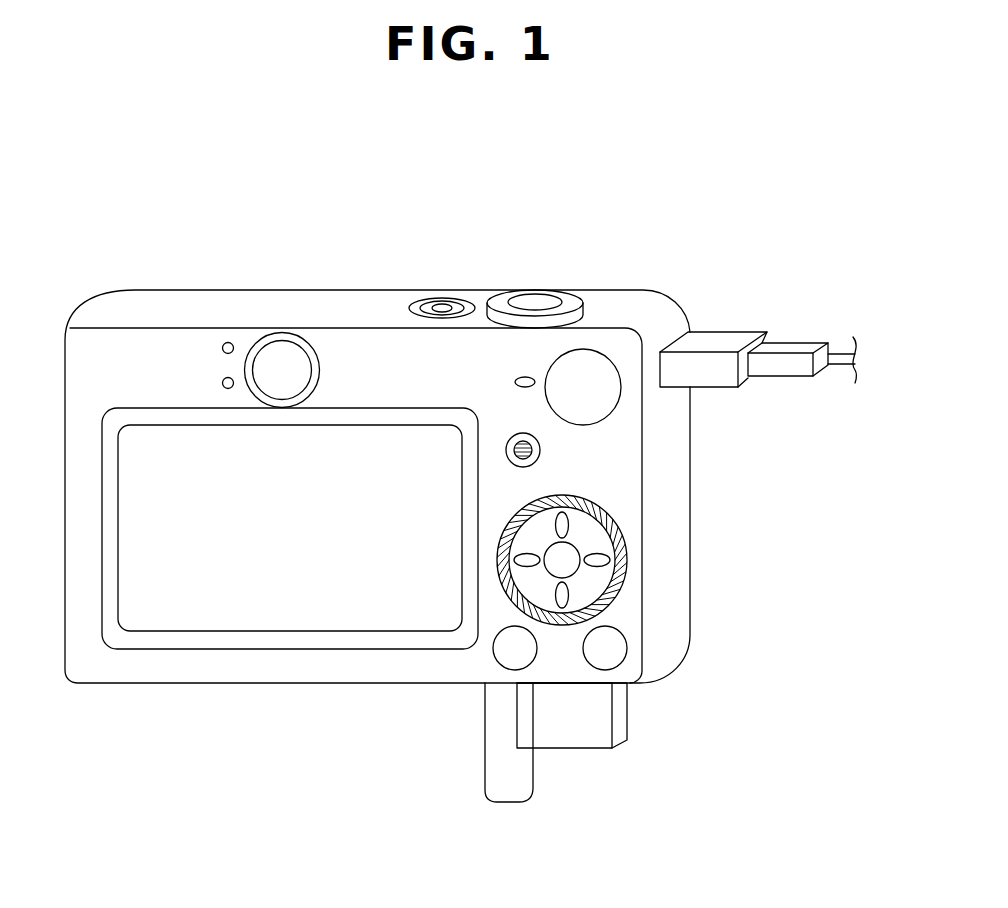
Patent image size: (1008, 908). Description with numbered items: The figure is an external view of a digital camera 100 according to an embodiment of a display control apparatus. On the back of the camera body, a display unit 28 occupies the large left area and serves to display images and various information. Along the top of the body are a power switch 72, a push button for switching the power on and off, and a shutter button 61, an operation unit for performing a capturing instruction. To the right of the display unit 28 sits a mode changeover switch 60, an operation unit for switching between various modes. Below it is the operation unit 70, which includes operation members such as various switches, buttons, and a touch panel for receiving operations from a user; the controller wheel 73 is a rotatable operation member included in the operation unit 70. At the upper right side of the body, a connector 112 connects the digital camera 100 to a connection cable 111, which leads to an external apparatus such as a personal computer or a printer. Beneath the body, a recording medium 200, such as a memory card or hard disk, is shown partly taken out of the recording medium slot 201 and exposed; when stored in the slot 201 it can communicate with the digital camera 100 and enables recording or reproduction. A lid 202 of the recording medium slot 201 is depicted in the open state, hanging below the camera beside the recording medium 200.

The digital camera 100 is at (150, 730).
The display unit 28 is at (178, 442).
The power switch 72 is at (441, 300).
The shutter button 61 is at (535, 300).
The mode changeover switch 60 is at (608, 403).
The connector 112 is at (713, 340).
The connection cable 111 is at (788, 352).
The operation unit 70 is at (535, 317).
The controller wheel 73 is at (535, 505).
The recording medium 200 is at (585, 738).
The recording medium slot 201 is at (535, 687).
The lid 202 is at (512, 803).